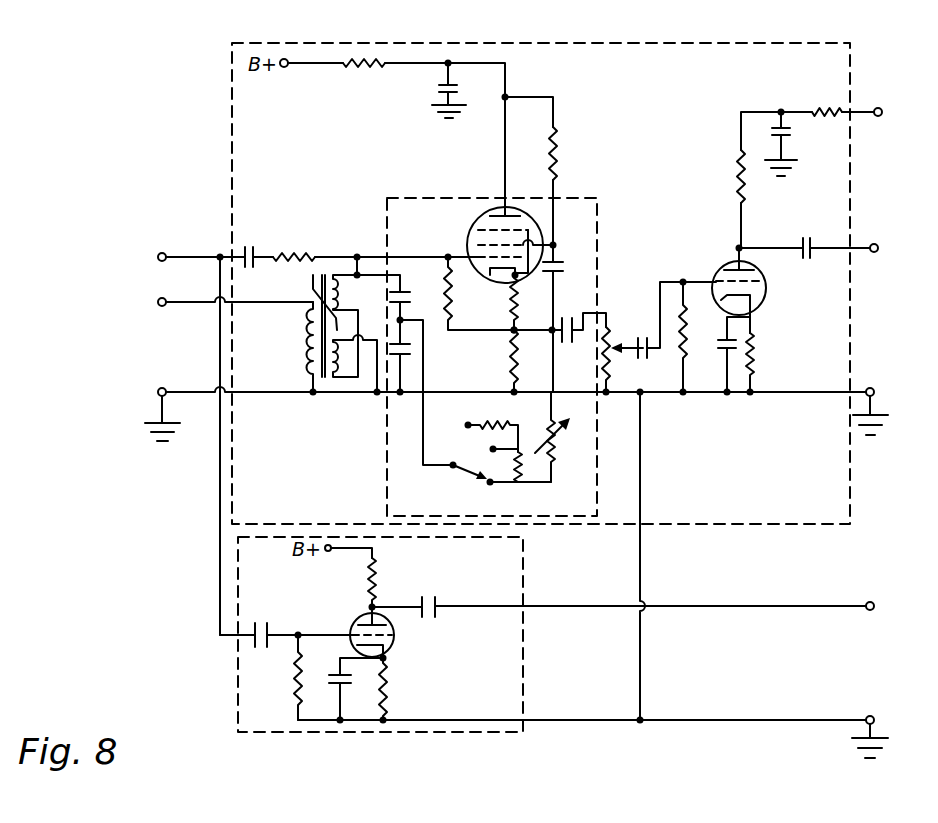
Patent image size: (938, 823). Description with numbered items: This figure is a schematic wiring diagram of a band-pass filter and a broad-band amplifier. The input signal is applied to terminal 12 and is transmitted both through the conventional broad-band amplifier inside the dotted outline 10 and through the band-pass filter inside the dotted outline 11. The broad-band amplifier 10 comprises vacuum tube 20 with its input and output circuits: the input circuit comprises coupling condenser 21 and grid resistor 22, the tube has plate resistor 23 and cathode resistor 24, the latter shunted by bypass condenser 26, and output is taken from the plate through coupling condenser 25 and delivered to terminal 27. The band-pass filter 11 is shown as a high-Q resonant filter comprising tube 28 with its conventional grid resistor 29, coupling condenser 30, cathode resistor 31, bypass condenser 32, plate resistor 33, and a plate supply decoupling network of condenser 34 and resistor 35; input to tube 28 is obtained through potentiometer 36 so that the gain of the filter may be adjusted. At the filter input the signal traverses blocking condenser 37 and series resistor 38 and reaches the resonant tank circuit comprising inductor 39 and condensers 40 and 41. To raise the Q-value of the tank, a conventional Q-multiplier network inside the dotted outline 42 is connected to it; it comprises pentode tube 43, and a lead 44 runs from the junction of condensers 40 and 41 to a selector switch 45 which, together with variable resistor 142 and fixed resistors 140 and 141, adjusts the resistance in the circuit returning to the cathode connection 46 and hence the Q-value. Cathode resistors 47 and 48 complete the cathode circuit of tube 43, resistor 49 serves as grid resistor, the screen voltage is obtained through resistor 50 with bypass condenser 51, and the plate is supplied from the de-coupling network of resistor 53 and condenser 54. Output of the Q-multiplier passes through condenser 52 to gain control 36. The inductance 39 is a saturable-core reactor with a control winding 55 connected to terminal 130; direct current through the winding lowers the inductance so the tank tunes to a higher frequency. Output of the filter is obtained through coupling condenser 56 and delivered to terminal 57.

The broad-band amplifier 10 is at (238, 666).
The band-pass filter 11 is at (232, 118).
The terminal 12 is at (152, 240).
The terminal 130 is at (158, 306).
The vacuum tube 20 is at (357, 620).
The coupling condenser 21 is at (258, 622).
The grid resistor 22 is at (296, 687).
The plate resistor 23 is at (378, 581).
The cathode resistor 24 is at (388, 693).
The coupling condenser 25 is at (435, 597).
The bypass condenser 26 is at (354, 681).
The terminal 27 is at (872, 602).
The tube 28 is at (722, 268).
The grid resistor 29 is at (687, 314).
The coupling condenser 30 is at (645, 359).
The cathode resistor 31 is at (755, 360).
The bypass condenser 32 is at (720, 348).
The plate resistor 33 is at (750, 165).
The condenser 34 is at (790, 131).
The resistor 35 is at (836, 111).
The potentiometer 36 is at (607, 326).
The blocking condenser 37 is at (258, 233).
The series resistor 38 is at (305, 252).
The inductor 39 is at (333, 380).
The condenser 40 is at (400, 290).
The condenser 41 is at (412, 349).
The Q-multiplier network 42 is at (437, 196).
The pentode tube 43 is at (472, 235).
The lead 44 is at (423, 440).
The selector switch 45 is at (472, 478).
The cathode connection 46 is at (512, 332).
The cathode resistor 47 is at (518, 306).
The cathode resistor 48 is at (518, 358).
The grid resistor 49 is at (452, 287).
The resistor 50 is at (558, 163).
The bypass condenser 51 is at (557, 265).
The condenser 52 is at (572, 341).
The resistor 53 is at (358, 65).
The condenser 54 is at (440, 88).
The control winding 55 is at (305, 336).
The coupling condenser 56 is at (803, 236).
The terminal 57 is at (892, 226).
The fixed resistor 140 is at (508, 420).
The fixed resistor 141 is at (522, 470).
The variable resistor 142 is at (554, 440).